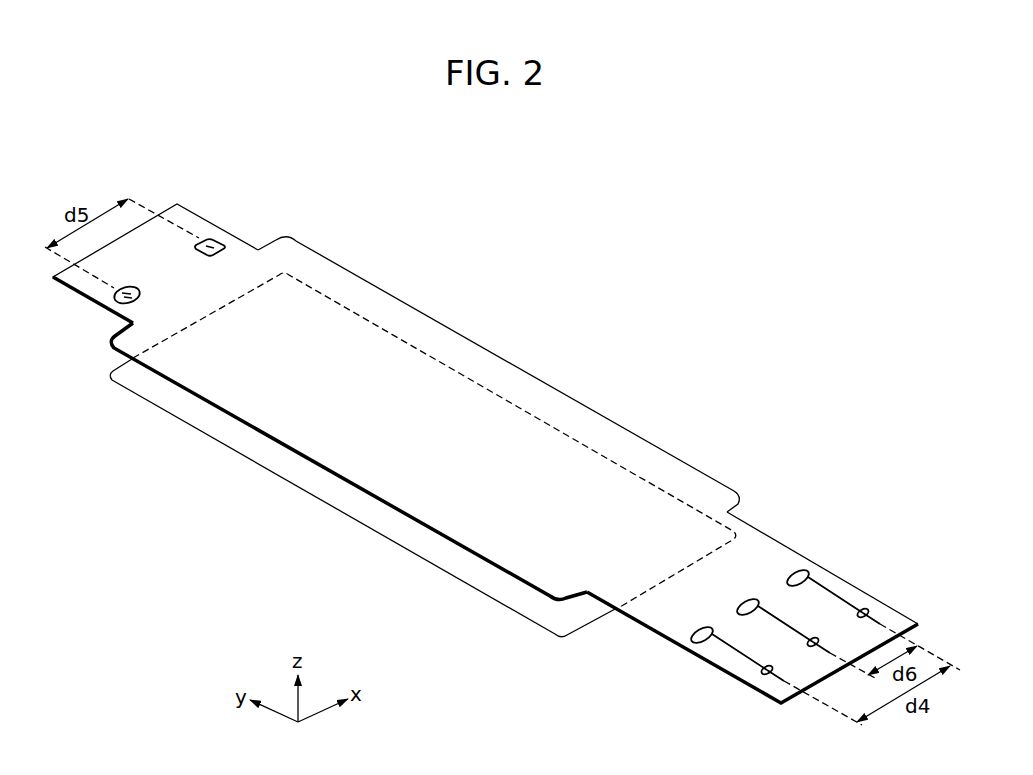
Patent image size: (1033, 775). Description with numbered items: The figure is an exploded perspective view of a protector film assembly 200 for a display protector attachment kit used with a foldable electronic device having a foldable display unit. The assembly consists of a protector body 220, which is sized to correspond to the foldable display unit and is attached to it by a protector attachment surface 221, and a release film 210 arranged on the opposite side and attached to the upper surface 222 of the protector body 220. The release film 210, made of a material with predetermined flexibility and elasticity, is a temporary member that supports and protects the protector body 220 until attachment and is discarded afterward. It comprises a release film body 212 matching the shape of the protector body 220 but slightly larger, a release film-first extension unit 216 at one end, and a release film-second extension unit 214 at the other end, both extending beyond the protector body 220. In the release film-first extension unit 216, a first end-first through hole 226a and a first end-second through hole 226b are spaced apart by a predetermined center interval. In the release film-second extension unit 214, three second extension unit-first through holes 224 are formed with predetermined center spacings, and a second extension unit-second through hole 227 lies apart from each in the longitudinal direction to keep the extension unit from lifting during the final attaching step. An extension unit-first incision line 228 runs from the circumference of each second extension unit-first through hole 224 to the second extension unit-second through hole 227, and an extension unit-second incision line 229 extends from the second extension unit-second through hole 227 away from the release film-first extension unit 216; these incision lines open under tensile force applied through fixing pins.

The protector film assembly 200 is at (264, 546).
The release film 210 is at (312, 435).
The release film body 212 is at (475, 362).
The release film-second extension unit 214 is at (760, 555).
The release film-first extension unit 216 is at (183, 217).
The protector body 220 is at (337, 495).
The protector attachment surface 221 is at (442, 573).
The upper surface 222 is at (410, 535).
The second extension unit-first through hole 224 is at (803, 570).
The first end-first through hole 226a is at (219, 240).
The first end-second through hole 226b is at (117, 294).
The second extension unit-second through hole 227 is at (880, 607).
The extension unit-first incision line 228 is at (835, 598).
The extension unit-second incision line 229 is at (777, 680).